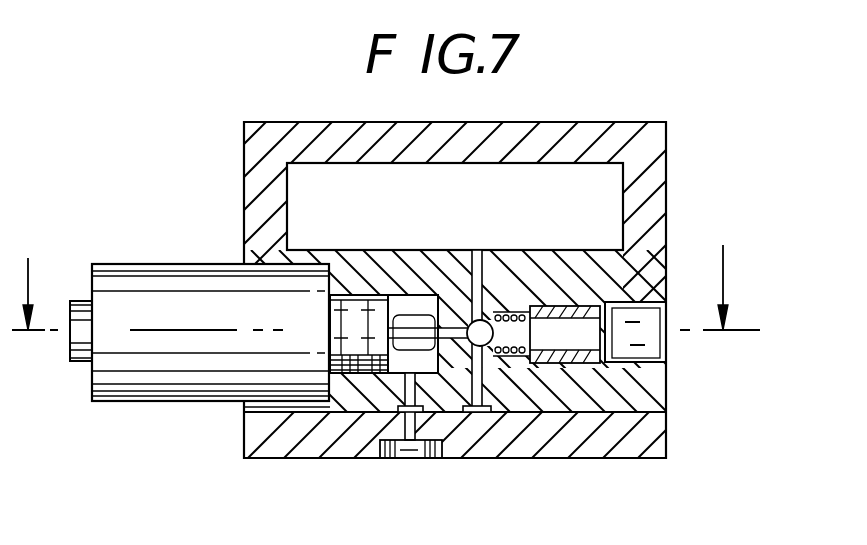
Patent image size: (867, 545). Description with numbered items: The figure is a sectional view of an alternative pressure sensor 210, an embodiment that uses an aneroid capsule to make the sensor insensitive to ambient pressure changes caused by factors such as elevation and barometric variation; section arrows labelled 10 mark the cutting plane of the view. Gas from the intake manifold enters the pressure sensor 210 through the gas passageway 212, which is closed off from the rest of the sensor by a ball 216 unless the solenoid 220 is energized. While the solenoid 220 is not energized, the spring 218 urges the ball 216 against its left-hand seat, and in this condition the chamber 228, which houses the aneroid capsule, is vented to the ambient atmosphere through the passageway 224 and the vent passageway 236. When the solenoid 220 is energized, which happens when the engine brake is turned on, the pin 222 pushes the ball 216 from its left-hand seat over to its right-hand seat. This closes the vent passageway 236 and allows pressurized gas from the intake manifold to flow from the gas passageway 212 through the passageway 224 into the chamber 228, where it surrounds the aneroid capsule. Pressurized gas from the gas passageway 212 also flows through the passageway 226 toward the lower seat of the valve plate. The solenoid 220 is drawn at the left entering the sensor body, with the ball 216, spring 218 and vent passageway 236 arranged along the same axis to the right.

The pressure sensor 210 is at (103, 97).
The gas passageway 212 is at (397, 460).
The ball 216 is at (470, 360).
The spring 218 is at (537, 385).
The solenoid 220 is at (165, 290).
The pin 222 is at (404, 258).
The passageway 224 is at (496, 258).
The passageway 226 is at (487, 413).
The chamber 228 is at (610, 183).
The vent passageway 236 is at (672, 249).
The section line 10 is at (386, 287).